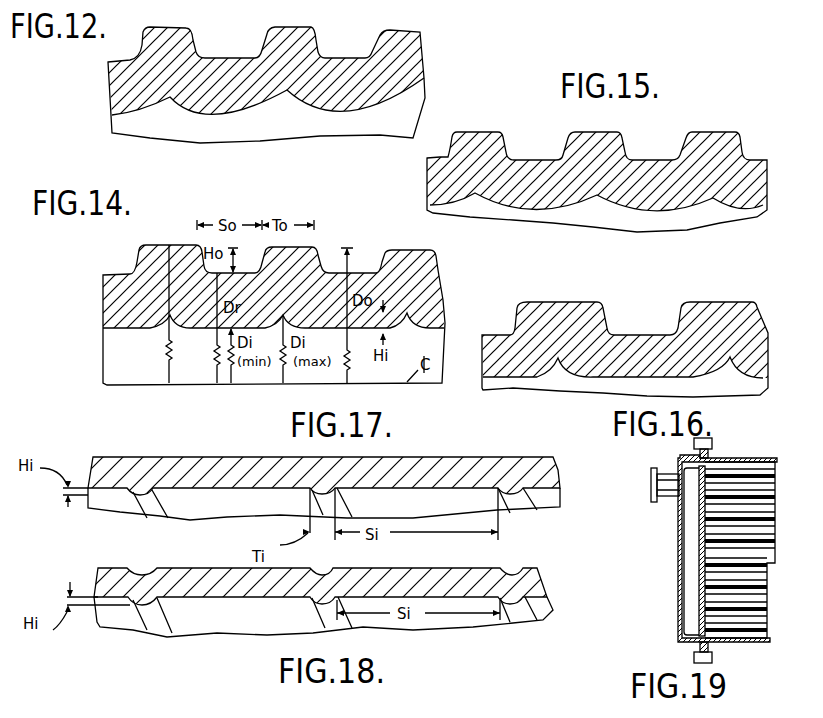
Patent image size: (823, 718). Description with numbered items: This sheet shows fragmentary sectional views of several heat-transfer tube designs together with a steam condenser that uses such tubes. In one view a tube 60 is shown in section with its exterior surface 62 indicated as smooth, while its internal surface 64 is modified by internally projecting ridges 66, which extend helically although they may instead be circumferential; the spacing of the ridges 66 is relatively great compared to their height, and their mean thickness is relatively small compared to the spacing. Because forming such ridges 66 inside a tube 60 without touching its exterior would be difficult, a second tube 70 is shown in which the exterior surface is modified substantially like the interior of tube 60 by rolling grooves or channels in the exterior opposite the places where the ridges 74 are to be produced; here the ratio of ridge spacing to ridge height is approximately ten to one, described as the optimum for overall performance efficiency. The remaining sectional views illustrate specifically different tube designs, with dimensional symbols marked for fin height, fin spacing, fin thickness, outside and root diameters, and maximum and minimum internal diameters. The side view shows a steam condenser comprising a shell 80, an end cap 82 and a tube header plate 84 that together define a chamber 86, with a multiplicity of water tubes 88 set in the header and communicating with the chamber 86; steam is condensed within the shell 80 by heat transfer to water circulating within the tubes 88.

In FIG. 17, the tube 60 is at (353, 490).
In FIG. 17, the exterior surface 62 is at (187, 457).
In FIG. 17, the internal surface 64 is at (223, 490).
In FIG. 17, the internally projecting ridges 66 is at (163, 503).
In FIG. 18, the tube 70 is at (342, 618).
In FIG. 18, the ridges 74 is at (178, 620).
In FIG. 19, the shell 80 is at (713, 548).
In FIG. 19, the end cap 82 is at (679, 600).
In FIG. 19, the tube header plate 84 is at (699, 530).
In FIG. 19, the chamber 86 is at (692, 562).
In FIG. 19, the water tubes 88 is at (738, 482).